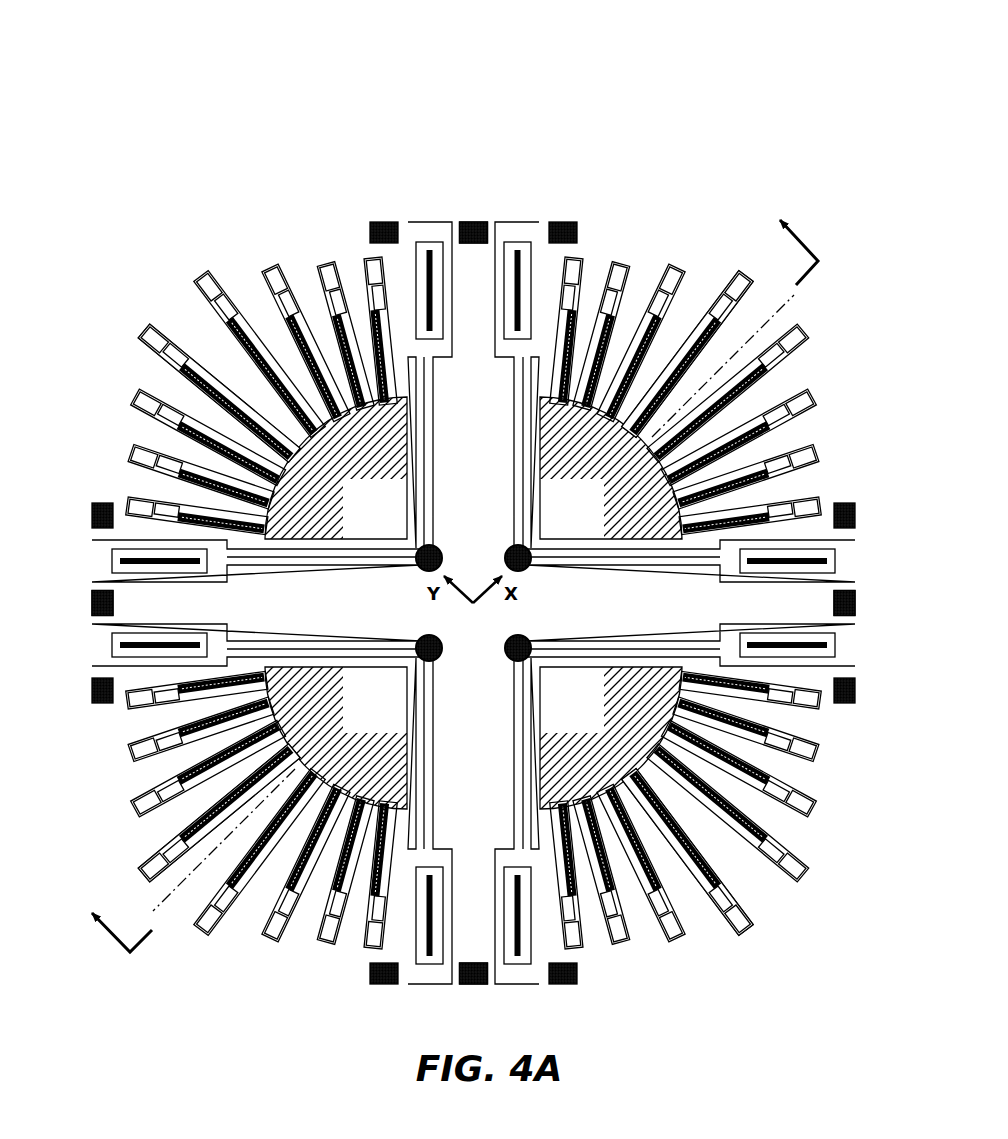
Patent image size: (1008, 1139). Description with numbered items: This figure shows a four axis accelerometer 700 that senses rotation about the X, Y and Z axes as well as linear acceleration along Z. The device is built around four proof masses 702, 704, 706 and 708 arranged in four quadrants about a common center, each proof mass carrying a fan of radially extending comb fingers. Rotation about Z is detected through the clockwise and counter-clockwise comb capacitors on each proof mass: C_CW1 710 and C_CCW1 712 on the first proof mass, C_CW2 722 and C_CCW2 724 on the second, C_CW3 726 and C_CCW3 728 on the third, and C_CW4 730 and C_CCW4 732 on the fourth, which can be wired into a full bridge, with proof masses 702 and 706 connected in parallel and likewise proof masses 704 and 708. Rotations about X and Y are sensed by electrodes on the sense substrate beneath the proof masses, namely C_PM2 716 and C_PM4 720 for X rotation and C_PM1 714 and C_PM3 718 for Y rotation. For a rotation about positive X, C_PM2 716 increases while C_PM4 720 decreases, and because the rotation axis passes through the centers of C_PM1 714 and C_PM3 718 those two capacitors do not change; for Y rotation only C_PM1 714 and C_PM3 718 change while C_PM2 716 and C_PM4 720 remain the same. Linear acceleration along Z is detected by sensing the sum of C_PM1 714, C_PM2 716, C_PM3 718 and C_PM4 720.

The gyroscope sensor structure 700 is at (157, 196).
The proof mass 702 is at (658, 307).
The proof mass 704 is at (308, 367).
The proof mass 706 is at (282, 828).
The proof mass 708 is at (703, 757).
The C_CW1 capacitor 710 is at (714, 343).
The C_CCW1 capacitor 712 is at (740, 297).
The C_PM1 capacitor 714 is at (578, 430).
The C_PM2 capacitor 716 is at (551, 731).
The C_PM3 capacitor 718 is at (396, 731).
The C_PM4 capacitor 720 is at (362, 436).
The C_CW2 capacitor 722 is at (689, 881).
The C_CCW2 capacitor 724 is at (728, 900).
The C_CW3 capacitor 726 is at (205, 851).
The C_CCW3 capacitor 728 is at (179, 823).
The C_CW4 capacitor 730 is at (226, 372).
The C_CCW4 capacitor 732 is at (183, 365).